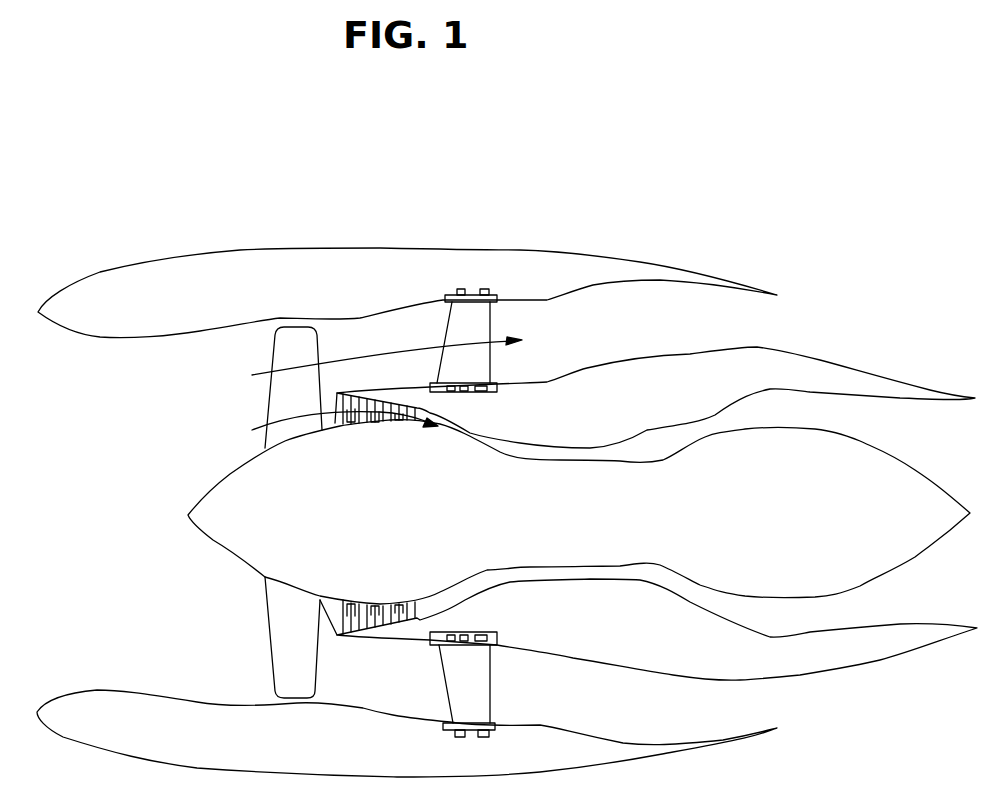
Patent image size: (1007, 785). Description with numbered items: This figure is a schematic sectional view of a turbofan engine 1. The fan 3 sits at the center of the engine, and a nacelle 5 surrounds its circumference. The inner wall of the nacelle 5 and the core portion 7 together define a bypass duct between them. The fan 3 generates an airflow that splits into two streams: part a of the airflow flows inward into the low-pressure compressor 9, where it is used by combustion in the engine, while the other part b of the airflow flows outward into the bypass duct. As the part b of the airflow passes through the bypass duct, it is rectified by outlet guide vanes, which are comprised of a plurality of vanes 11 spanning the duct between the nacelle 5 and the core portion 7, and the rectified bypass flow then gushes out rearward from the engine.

The turbofan engine 1 is at (628, 188).
The fan 3 is at (278, 657).
The nacelle 5 is at (322, 258).
The core portion 7 is at (518, 415).
The low-pressure compressor 9 is at (418, 645).
The vanes 11 is at (470, 317).
The part a of airflow a is at (252, 430).
The part b of airflow b is at (252, 375).